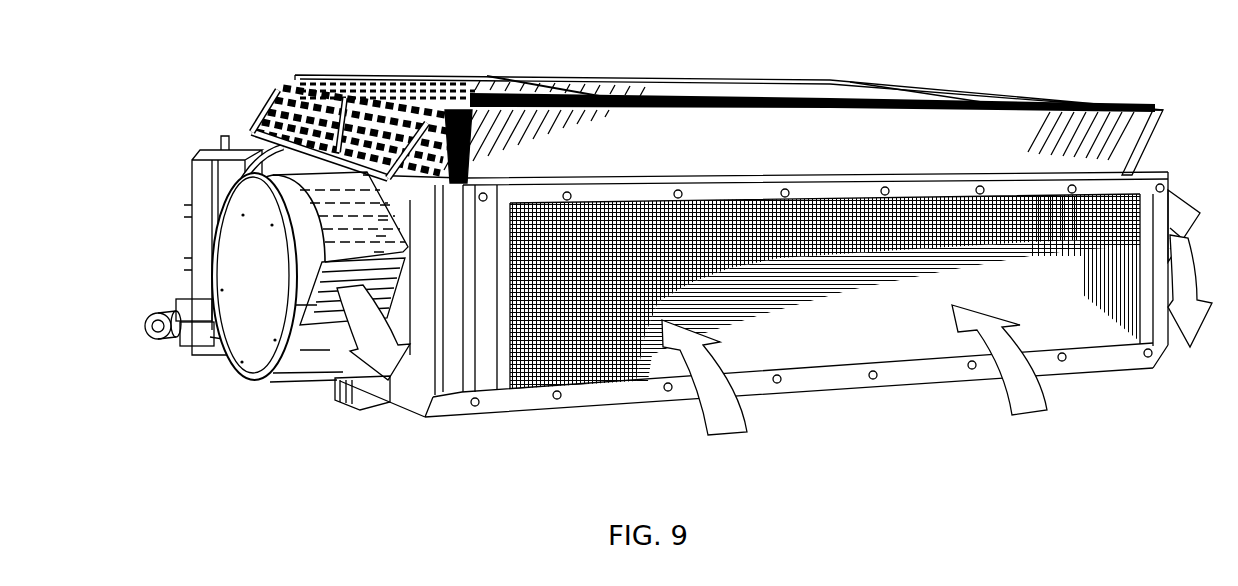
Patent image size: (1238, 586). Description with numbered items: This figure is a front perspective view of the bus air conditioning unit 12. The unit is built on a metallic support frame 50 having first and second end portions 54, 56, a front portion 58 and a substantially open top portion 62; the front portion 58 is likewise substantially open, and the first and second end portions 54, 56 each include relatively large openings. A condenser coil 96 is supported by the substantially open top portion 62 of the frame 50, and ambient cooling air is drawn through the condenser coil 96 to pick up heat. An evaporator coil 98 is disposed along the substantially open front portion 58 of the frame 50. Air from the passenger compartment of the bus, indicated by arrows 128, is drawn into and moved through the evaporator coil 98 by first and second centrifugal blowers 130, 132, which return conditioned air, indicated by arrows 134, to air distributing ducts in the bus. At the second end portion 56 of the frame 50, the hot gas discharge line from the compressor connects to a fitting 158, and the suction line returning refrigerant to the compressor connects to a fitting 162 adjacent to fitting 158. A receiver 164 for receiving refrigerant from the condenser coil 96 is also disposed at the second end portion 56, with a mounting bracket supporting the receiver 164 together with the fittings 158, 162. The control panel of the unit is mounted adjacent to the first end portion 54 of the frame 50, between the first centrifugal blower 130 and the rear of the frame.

The bus air conditioning unit 12 is at (690, 35).
The substantially open top portion 62 is at (734, 178).
The condenser coil 96 is at (1163, 121).
The second end portion 56 is at (1168, 177).
The evaporator coil 98 is at (1112, 240).
The first centrifugal blower 130 is at (1193, 217).
The arrows indicating conditioned air 134 is at (408, 376).
The arrows indicating air from passenger compartment 128 is at (733, 432).
The metallic support frame 50 is at (458, 375).
The front portion 58 is at (440, 352).
The second centrifugal blower 132 is at (263, 357).
The fitting 162 is at (157, 318).
The fitting 158 is at (190, 305).
The receiver 164 is at (210, 190).
The first end portion 54 is at (407, 206).